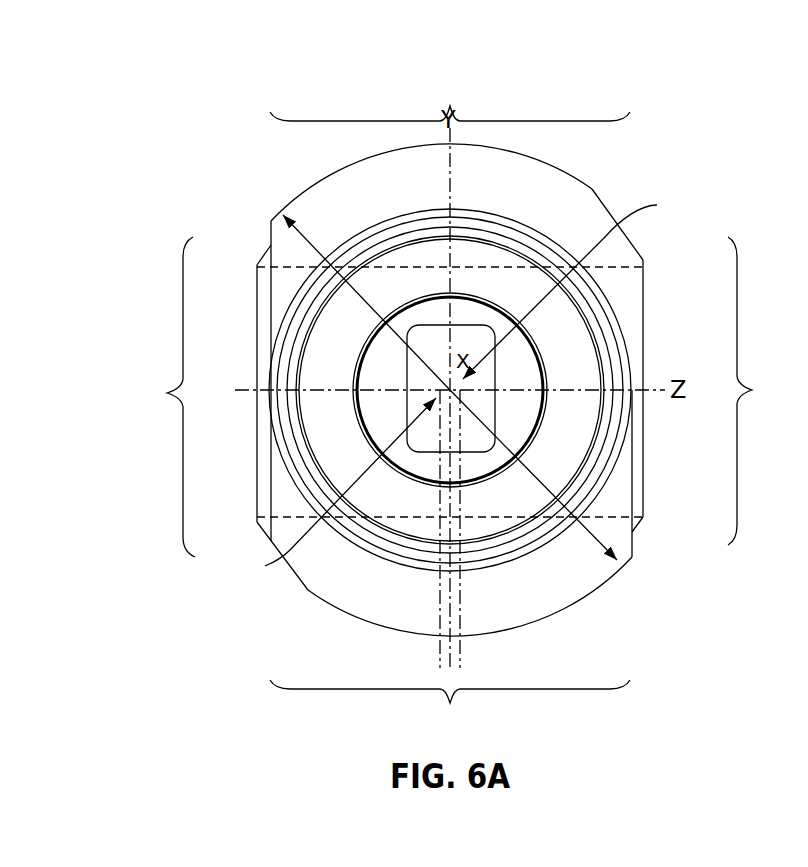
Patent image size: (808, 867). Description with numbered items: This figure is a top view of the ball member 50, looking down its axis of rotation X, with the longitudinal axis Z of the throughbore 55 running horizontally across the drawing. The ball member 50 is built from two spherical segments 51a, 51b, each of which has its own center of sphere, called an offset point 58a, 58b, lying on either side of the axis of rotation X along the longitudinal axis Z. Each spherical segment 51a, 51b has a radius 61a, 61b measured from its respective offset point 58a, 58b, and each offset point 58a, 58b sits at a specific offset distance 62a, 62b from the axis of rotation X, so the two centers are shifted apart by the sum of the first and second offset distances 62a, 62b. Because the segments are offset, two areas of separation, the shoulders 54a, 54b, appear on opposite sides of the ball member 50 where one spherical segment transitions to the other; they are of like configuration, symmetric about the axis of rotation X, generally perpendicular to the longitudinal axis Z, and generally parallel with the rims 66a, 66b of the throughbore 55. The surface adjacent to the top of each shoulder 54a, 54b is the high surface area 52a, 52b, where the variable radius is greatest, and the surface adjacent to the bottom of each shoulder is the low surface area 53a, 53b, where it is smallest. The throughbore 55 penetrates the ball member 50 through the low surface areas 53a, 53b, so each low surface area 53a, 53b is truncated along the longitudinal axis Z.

The ball member 50 is at (207, 139).
The first spherical segment 51a is at (577, 213).
The second spherical segment 51b is at (333, 573).
The first high surface area 52a is at (450, 94).
The second high surface area 52b is at (450, 709).
The first low surface area 53a is at (764, 391).
The second low surface area 53b is at (160, 397).
The first shoulder 54a is at (270, 302).
The second shoulder 54b is at (645, 470).
The throughbore 55 is at (652, 357).
The first offset point 58a is at (329, 489).
The second offset point 58b is at (581, 285).
The first radius 61a is at (283, 213).
The second radius 61b is at (620, 565).
The first offset distance 62a is at (463, 665).
The second offset distance 62b is at (437, 652).
The first rim 66a is at (645, 315).
The second rim 66b is at (257, 478).